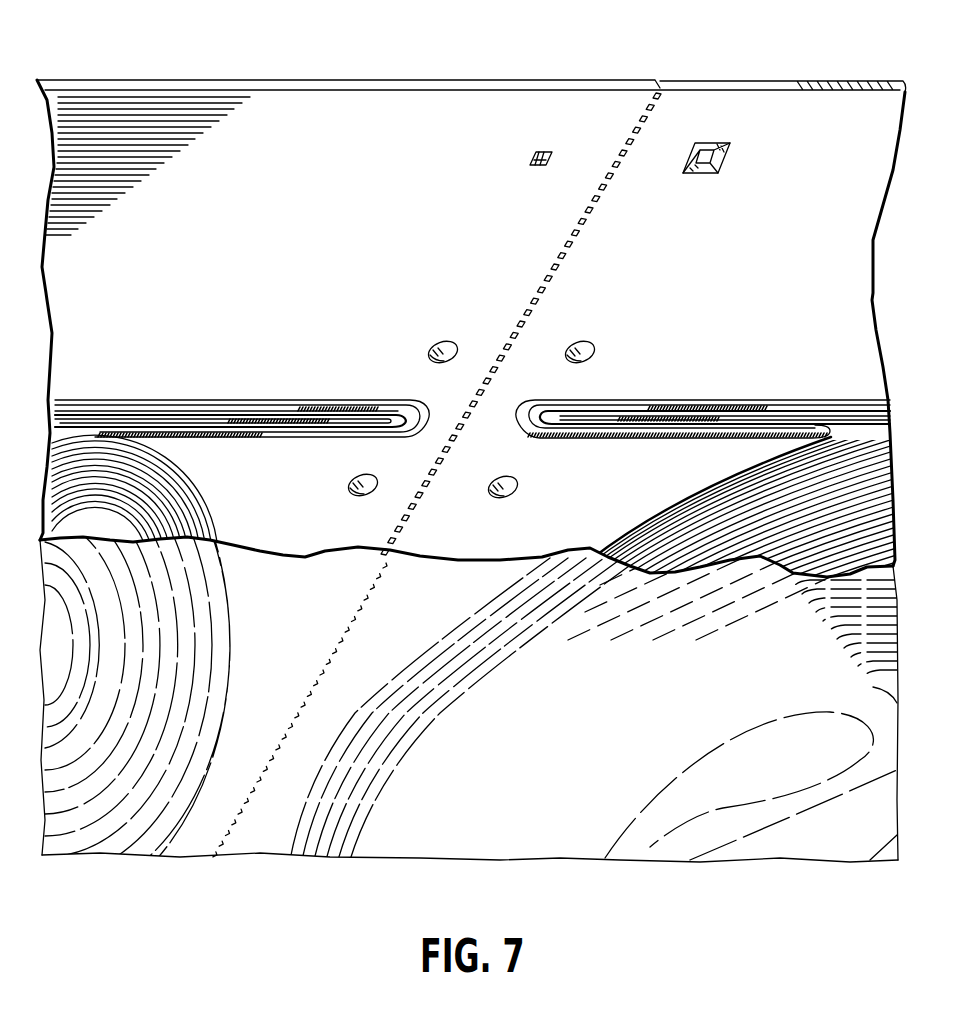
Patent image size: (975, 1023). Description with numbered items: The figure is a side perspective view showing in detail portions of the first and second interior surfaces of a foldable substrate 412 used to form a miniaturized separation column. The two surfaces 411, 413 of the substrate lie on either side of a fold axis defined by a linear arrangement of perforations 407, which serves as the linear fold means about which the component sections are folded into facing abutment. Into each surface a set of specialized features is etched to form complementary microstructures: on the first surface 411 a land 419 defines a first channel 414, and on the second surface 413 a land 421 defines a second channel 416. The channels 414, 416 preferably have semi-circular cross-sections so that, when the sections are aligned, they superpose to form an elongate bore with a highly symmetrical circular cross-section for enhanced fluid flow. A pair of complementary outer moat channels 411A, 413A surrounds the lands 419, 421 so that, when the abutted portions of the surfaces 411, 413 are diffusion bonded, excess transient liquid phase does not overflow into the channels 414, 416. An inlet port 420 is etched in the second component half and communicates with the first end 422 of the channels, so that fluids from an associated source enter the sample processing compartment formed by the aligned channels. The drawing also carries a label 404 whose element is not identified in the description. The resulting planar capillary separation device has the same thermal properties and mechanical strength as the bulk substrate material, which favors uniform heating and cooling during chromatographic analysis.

The top edge of panel 404 is at (460, 89).
The linear arrangement of perforations 407 is at (606, 186).
The first interior surface 411 is at (280, 223).
The complementary outer moat channel 411A is at (148, 403).
The foldable substrate 412 is at (296, 60).
The second interior surface 413 is at (755, 285).
The complementary outer moat channel 413A is at (862, 402).
The first channel 414 is at (232, 427).
The second channel 416 is at (778, 425).
The land 419 is at (363, 415).
The inlet port 420 is at (552, 413).
The land 421 is at (604, 425).
The first end 422 is at (681, 392).